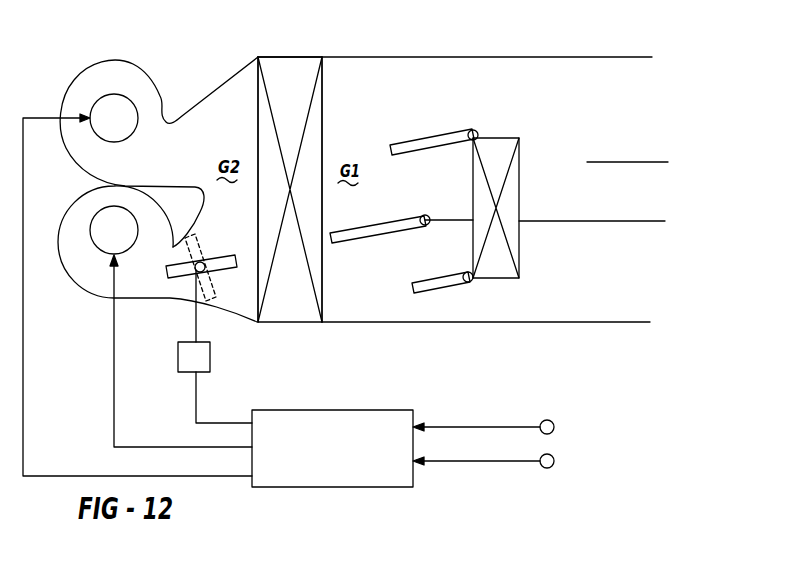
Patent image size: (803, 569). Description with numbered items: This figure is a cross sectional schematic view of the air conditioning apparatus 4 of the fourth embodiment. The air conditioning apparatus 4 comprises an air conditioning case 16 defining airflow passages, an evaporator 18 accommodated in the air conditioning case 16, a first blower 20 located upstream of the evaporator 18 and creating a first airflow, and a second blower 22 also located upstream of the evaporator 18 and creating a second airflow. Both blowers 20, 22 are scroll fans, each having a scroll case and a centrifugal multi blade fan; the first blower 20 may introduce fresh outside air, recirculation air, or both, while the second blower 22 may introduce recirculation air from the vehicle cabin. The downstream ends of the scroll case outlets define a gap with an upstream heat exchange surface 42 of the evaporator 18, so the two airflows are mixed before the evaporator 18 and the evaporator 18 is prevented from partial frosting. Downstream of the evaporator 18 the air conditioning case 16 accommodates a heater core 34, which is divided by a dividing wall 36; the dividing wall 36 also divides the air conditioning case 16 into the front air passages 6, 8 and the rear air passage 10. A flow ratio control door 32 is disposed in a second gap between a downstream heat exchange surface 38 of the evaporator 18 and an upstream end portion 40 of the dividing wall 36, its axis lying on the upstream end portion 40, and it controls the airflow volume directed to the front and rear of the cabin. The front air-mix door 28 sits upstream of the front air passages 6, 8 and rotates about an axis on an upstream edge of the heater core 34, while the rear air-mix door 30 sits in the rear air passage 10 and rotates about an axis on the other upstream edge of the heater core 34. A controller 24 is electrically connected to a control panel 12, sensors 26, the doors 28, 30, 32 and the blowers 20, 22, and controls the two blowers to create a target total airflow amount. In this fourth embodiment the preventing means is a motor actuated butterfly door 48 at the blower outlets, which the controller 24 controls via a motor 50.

The air conditioning apparatus 4 is at (512, 38).
The front air passage 6 is at (624, 100).
The front air passage 8 is at (630, 175).
The rear air passage 10 is at (637, 297).
The control panel 12 is at (549, 467).
The air conditioning case 16 is at (423, 56).
The evaporator 18 is at (298, 72).
The first blower 20 is at (133, 64).
The second blower 22 is at (78, 284).
The controller 24 is at (368, 488).
The sensors 26 is at (552, 421).
The front air-mix door 28 is at (425, 140).
The rear air-mix door 30 is at (440, 288).
The flow ratio control door 32 is at (390, 237).
The heater core 34 is at (500, 145).
The dividing wall 36 is at (458, 219).
The downstream heat exchange surface 38 is at (323, 126).
The upstream end portion 40 is at (427, 215).
The upstream heat exchange surface 42 is at (257, 223).
The butterfly door 48 is at (177, 276).
The motor 50 is at (210, 357).